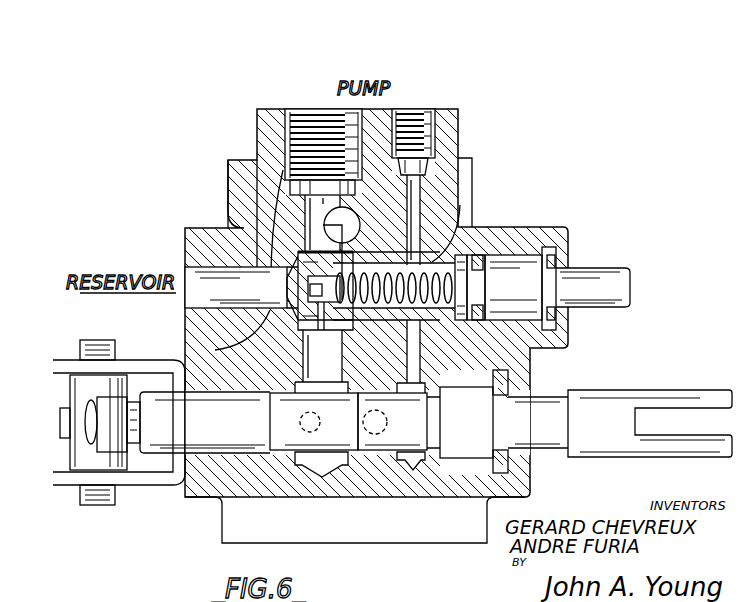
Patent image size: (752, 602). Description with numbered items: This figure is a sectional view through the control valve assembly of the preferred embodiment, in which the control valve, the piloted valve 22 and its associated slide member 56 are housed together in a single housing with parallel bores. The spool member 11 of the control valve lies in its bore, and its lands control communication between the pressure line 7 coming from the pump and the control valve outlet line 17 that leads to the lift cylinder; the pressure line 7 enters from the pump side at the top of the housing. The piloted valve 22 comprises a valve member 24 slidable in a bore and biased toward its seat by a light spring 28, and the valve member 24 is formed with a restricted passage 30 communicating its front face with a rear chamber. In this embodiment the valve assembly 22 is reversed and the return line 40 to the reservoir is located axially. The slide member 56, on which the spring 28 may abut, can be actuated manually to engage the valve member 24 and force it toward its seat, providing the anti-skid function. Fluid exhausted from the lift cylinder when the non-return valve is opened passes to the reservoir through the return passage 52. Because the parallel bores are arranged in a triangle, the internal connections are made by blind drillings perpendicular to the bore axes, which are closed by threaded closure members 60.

The pressure line 7 is at (323, 27).
The spool member 11 is at (545, 432).
The control valve outlet line 17 is at (375, 436).
The piloted valve 22 is at (386, 247).
The valve member 24 is at (435, 257).
The light spring 28 is at (453, 287).
The restricted passage 30 is at (318, 310).
The return line 40 is at (207, 287).
The return passage 52 is at (305, 432).
The slide member 56 is at (527, 290).
The threaded closure members 60 is at (403, 122).